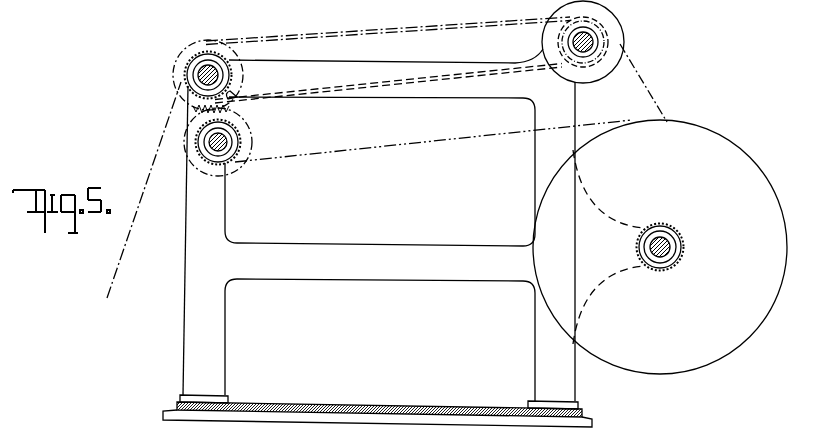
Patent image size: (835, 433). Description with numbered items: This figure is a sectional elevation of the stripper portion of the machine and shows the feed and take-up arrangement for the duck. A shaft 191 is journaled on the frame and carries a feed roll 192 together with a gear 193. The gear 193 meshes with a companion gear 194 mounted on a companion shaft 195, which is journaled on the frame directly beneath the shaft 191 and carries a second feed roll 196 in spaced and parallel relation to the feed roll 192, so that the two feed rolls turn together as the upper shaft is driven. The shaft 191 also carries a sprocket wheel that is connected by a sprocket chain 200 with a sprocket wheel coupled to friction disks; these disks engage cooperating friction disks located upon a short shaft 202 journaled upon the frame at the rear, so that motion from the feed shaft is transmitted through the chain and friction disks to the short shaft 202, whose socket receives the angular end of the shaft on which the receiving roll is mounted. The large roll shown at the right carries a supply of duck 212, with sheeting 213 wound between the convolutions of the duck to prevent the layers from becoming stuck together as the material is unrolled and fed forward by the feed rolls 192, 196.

The shaft 191 is at (198, 78).
The feed roll 192 is at (188, 62).
The gear 193 is at (232, 97).
The companion gear 194 is at (200, 114).
The companion shaft 195 is at (208, 147).
The second feed roll 196 is at (238, 144).
The sprocket chain 200 is at (374, 35).
The short shaft 202 is at (596, 38).
The duck 212 is at (714, 132).
The sheeting 213 is at (642, 76).